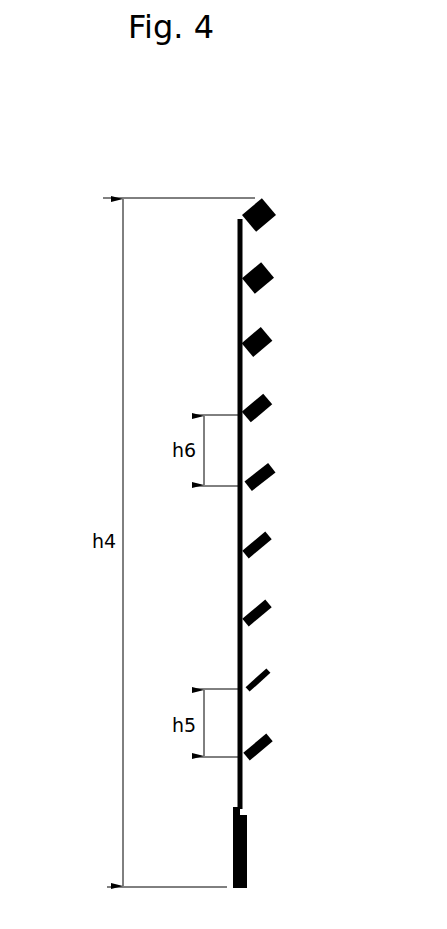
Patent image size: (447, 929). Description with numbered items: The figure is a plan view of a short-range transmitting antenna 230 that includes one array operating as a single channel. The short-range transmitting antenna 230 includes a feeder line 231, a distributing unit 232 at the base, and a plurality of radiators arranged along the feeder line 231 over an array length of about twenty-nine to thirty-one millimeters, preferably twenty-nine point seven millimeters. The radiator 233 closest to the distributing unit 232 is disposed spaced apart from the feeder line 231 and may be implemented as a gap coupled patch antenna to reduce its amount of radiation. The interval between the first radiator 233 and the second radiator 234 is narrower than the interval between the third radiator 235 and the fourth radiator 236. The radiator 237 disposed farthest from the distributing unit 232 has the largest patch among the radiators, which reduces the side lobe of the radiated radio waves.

The short-range transmitting antenna 230 is at (77, 117).
The feeder line 231 is at (243, 790).
The distributing unit 232 is at (247, 852).
The radiator 233 is at (266, 752).
The second radiator 234 is at (266, 683).
The third radiator 235 is at (268, 482).
The fourth radiator 236 is at (266, 414).
The radiator 237 is at (268, 208).